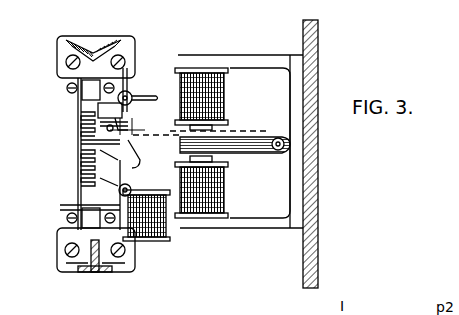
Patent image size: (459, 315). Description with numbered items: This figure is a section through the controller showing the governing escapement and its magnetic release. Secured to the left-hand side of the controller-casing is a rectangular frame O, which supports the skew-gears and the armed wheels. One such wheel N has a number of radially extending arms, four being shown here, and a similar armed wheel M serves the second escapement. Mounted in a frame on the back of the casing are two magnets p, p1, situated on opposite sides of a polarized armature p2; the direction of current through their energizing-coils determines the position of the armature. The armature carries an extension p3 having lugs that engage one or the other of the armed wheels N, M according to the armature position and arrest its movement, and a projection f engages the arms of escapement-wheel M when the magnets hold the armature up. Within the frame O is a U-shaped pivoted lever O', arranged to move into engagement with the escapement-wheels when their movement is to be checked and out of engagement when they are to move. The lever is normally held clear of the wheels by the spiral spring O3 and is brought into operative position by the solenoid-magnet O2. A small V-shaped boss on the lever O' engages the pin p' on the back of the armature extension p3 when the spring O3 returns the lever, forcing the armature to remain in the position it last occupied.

The rectangular frame O is at (96, 41).
The U-shaped pivoted lever O' is at (79, 142).
The solenoid-magnet O2 is at (152, 240).
The spiral spring O3 is at (80, 118).
The armed escapement-wheel M is at (140, 90).
The armed wheel N is at (62, 203).
The magnet p is at (212, 99).
The pin p' is at (76, 149).
The magnet p1 is at (228, 183).
The polarized armature p2 is at (256, 133).
The armature extension p3 is at (132, 112).
The projection f is at (127, 126).